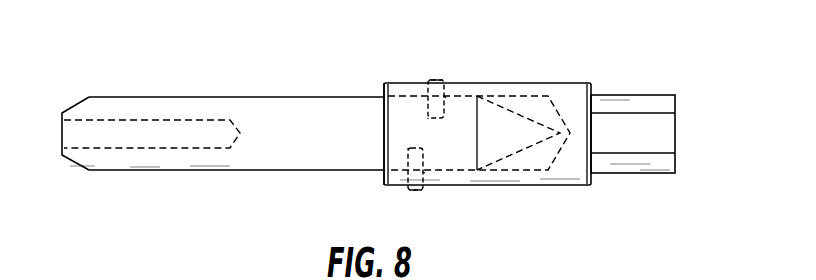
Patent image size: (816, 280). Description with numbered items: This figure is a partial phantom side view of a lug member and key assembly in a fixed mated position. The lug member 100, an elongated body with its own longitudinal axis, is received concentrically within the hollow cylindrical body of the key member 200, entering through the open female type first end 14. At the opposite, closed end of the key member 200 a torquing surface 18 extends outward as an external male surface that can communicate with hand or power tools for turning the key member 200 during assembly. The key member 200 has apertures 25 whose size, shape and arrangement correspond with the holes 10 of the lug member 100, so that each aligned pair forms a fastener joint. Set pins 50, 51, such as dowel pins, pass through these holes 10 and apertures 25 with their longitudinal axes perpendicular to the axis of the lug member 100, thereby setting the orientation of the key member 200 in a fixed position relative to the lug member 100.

The lug member 100 is at (122, 97).
The key member 200 is at (547, 82).
The first end 14 is at (383, 90).
The set pin 50 is at (430, 80).
The set pin 51 is at (413, 190).
The aperture 25 is at (445, 97).
The hole 10 is at (408, 156).
The torquing surface 18 is at (643, 103).